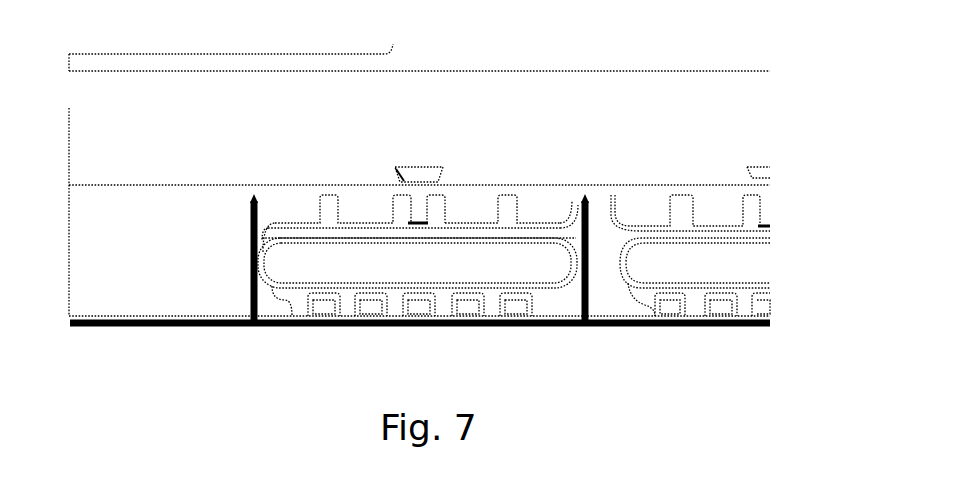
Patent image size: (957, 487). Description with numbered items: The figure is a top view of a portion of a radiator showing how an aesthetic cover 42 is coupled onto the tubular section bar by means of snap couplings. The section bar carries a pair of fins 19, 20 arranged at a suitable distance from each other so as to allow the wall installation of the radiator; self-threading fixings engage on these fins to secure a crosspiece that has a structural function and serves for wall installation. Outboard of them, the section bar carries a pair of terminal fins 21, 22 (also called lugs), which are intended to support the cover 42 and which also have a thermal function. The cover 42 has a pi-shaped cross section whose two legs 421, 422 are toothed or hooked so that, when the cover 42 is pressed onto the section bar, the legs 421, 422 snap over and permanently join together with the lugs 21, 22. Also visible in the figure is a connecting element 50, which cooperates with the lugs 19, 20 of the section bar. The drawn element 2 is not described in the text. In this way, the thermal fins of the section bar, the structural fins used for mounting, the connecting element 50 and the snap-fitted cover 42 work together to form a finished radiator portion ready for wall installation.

The battery cell 2 is at (251, 246).
The fin 19 is at (390, 202).
The fin 20 is at (437, 191).
The terminal fin 21 is at (257, 195).
The terminal fin 22 is at (578, 198).
The cover 42 is at (265, 330).
The connecting element 50 is at (402, 172).
The leg 421 is at (251, 200).
The leg 422 is at (586, 195).